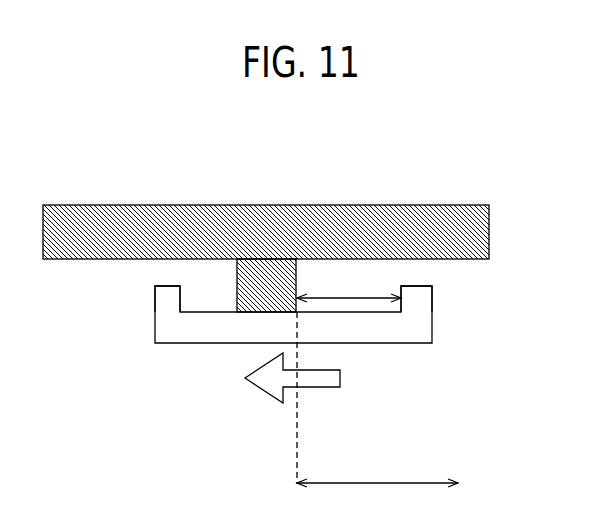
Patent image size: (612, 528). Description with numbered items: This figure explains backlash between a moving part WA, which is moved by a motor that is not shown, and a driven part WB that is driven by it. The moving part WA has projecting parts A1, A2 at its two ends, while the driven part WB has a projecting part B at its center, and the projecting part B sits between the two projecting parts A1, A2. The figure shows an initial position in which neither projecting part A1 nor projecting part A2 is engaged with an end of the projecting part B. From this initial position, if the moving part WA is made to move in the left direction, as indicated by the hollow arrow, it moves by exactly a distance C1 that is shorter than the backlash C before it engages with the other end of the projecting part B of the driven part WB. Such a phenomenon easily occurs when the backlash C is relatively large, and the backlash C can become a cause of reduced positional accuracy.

The driven part WB is at (466, 225).
The projecting part B is at (267, 235).
The moving part WA is at (372, 329).
The projecting part A1 is at (165, 300).
The projecting part A2 is at (425, 300).
The distance C1 is at (349, 287).
The backlash C is at (377, 468).